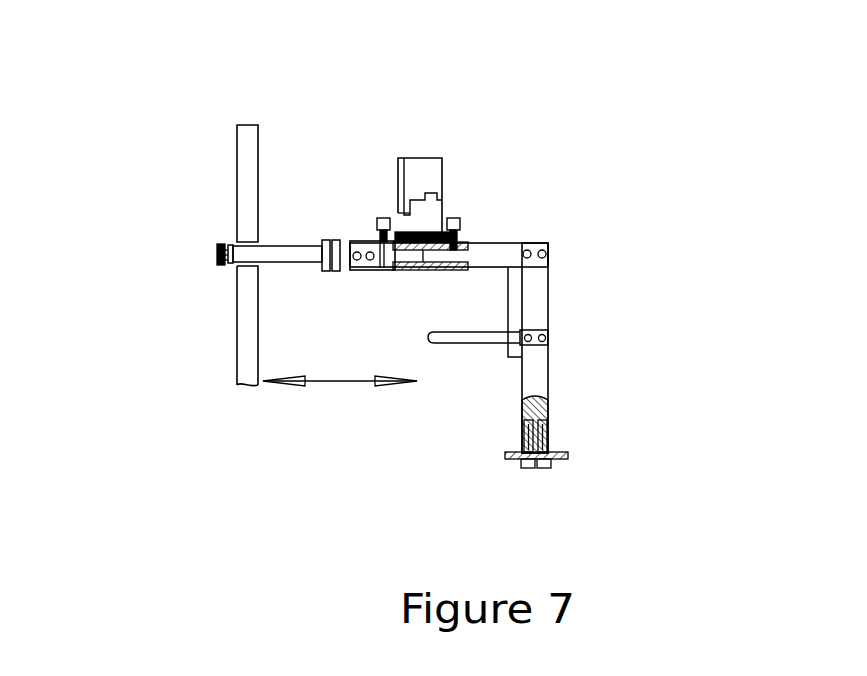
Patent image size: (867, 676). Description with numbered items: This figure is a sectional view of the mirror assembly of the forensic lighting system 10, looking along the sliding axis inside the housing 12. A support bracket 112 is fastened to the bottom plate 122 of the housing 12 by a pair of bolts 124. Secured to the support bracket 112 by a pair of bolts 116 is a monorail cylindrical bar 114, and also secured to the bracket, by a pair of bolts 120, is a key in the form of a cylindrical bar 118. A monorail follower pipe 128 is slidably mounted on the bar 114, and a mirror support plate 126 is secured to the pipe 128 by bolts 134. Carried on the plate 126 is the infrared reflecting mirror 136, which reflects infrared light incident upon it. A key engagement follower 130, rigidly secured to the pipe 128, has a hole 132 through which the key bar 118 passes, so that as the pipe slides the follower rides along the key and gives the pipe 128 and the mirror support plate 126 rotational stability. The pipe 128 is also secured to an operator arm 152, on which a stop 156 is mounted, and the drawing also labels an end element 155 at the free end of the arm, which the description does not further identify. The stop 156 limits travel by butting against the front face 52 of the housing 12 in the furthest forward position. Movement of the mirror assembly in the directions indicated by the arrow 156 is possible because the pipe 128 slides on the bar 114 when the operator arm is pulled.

The forensic lighting system 10 is at (593, 136).
The housing 12 is at (505, 455).
The front face 52 is at (237, 140).
The support bracket 112 is at (548, 300).
The monorail cylindrical bar 114 is at (503, 258).
The bolts 116 is at (548, 264).
The cylindrical bar (key) 118 is at (475, 338).
The bolts 120 is at (546, 345).
The bottom plate 122 is at (550, 453).
The bolts 124 is at (530, 470).
The mirror support plate 126 is at (352, 242).
The monorail follower pipe 128 is at (420, 271).
The key engagement follower 130 is at (510, 294).
The hole 132 is at (548, 322).
The bolts 134 is at (384, 217).
The infrared reflecting mirror 136 is at (424, 178).
The operator arm 152 is at (336, 240).
The end fitting 155 is at (219, 246).
The stop 156 is at (338, 272).